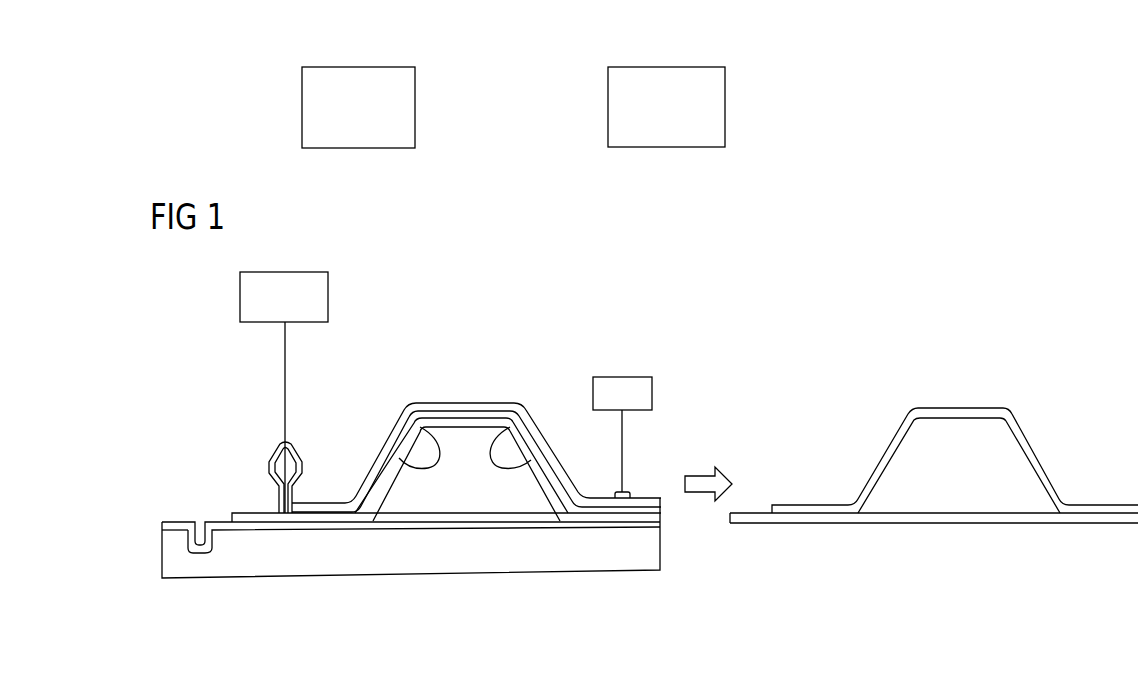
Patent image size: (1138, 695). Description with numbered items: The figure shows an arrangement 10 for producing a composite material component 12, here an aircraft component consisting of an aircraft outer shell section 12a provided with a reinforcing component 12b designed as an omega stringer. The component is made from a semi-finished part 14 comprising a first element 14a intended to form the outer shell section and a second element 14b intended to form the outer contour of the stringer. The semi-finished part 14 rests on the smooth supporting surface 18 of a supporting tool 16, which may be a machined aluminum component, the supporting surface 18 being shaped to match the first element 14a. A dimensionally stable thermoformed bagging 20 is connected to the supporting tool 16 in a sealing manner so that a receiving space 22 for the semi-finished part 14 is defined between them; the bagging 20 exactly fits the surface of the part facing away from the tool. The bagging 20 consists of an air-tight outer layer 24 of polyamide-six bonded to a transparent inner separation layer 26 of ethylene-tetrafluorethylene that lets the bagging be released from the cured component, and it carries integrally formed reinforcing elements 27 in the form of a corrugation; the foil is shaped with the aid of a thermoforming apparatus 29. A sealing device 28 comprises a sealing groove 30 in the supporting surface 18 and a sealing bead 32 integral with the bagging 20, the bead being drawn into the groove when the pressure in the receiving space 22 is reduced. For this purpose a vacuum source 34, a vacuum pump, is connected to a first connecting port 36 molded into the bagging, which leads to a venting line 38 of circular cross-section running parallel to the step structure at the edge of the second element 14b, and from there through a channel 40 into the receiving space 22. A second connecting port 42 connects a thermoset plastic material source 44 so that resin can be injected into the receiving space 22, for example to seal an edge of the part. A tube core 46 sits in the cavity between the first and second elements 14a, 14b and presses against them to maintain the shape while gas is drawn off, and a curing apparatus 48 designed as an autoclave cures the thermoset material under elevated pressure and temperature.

The arrangement 10 is at (504, 338).
The composite material component 12 is at (973, 401).
The aircraft outer shell section 12a is at (957, 524).
The reinforcing component 12b is at (1038, 458).
The semi-finished part 14 is at (436, 403).
The first element 14a is at (457, 523).
The second element 14b is at (526, 421).
The supporting tool 16 is at (585, 568).
The supporting surface 18 is at (497, 508).
The bagging 20 is at (465, 390).
The receiving space 22 is at (403, 527).
The air-tight outer layer 24 is at (505, 403).
The inner separation layer 26 is at (410, 413).
The reinforcing elements 27 is at (385, 444).
The sealing device 28 is at (182, 494).
The thermoforming apparatus 29 is at (355, 80).
The sealing groove 30 is at (200, 556).
The sealing bead 32 is at (200, 527).
The vacuum source 34 is at (330, 296).
The first connecting port 36 is at (298, 446).
The venting line 38 is at (269, 463).
The channel 40 is at (300, 492).
The second connecting port 42 is at (625, 490).
The thermoset plastic material source 44 is at (620, 376).
The tube core 46 is at (509, 524).
The curing apparatus 48 is at (663, 83).